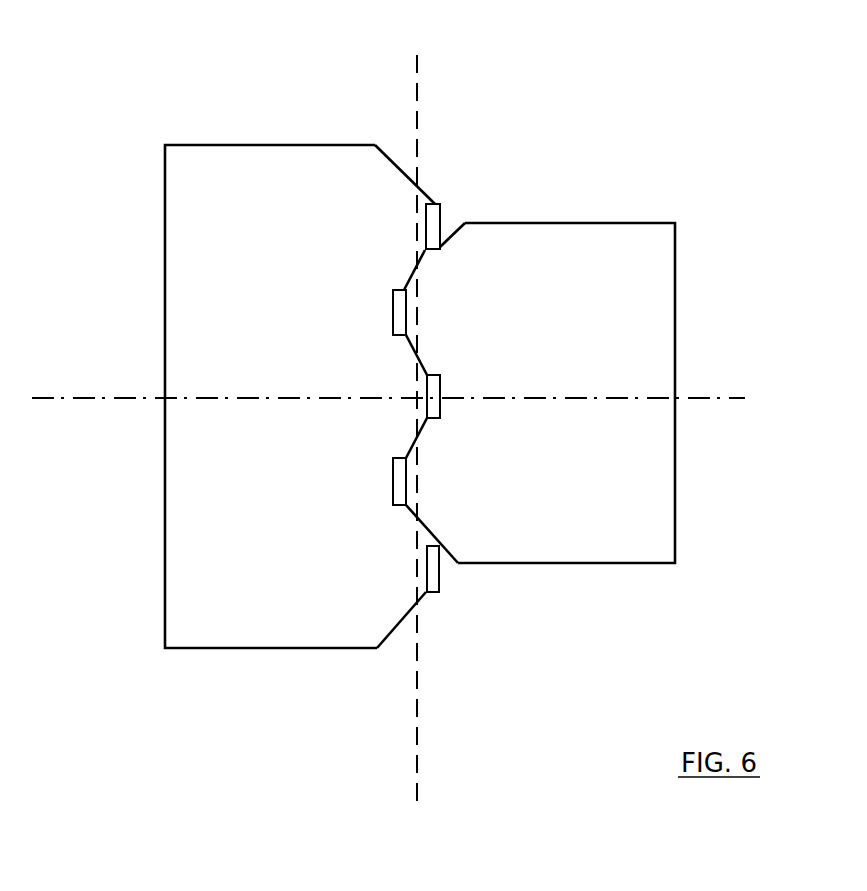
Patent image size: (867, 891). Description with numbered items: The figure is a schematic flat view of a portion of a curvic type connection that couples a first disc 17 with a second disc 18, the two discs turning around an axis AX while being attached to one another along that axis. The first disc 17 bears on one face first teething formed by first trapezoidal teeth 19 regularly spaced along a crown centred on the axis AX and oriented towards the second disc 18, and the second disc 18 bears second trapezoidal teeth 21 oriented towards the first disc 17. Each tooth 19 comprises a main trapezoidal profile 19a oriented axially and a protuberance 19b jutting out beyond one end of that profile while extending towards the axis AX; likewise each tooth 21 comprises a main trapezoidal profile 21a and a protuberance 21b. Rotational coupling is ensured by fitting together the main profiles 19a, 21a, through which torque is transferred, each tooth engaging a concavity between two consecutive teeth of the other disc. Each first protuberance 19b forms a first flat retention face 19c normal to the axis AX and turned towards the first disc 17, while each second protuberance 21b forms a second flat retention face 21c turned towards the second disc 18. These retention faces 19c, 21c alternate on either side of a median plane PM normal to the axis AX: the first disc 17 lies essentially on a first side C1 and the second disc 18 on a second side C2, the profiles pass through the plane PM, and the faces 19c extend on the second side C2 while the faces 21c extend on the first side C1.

The first disc 17 is at (271, 396).
The second disc 18 is at (566, 393).
The first trapezoidal teeth 19 is at (307, 396).
The main trapezoidal profile 19a is at (397, 396).
The first protuberance 19b is at (426, 218).
The first flat retention face 19c is at (429, 216).
The second trapezoidal teeth 21 is at (527, 364).
The main trapezoidal profile 21a is at (456, 340).
The second protuberance 21b is at (395, 291).
The second flat retention face 21c is at (398, 303).
The median plane PM is at (420, 83).
The axis AX is at (55, 401).
The first side C1 is at (365, 740).
The second side C2 is at (478, 740).